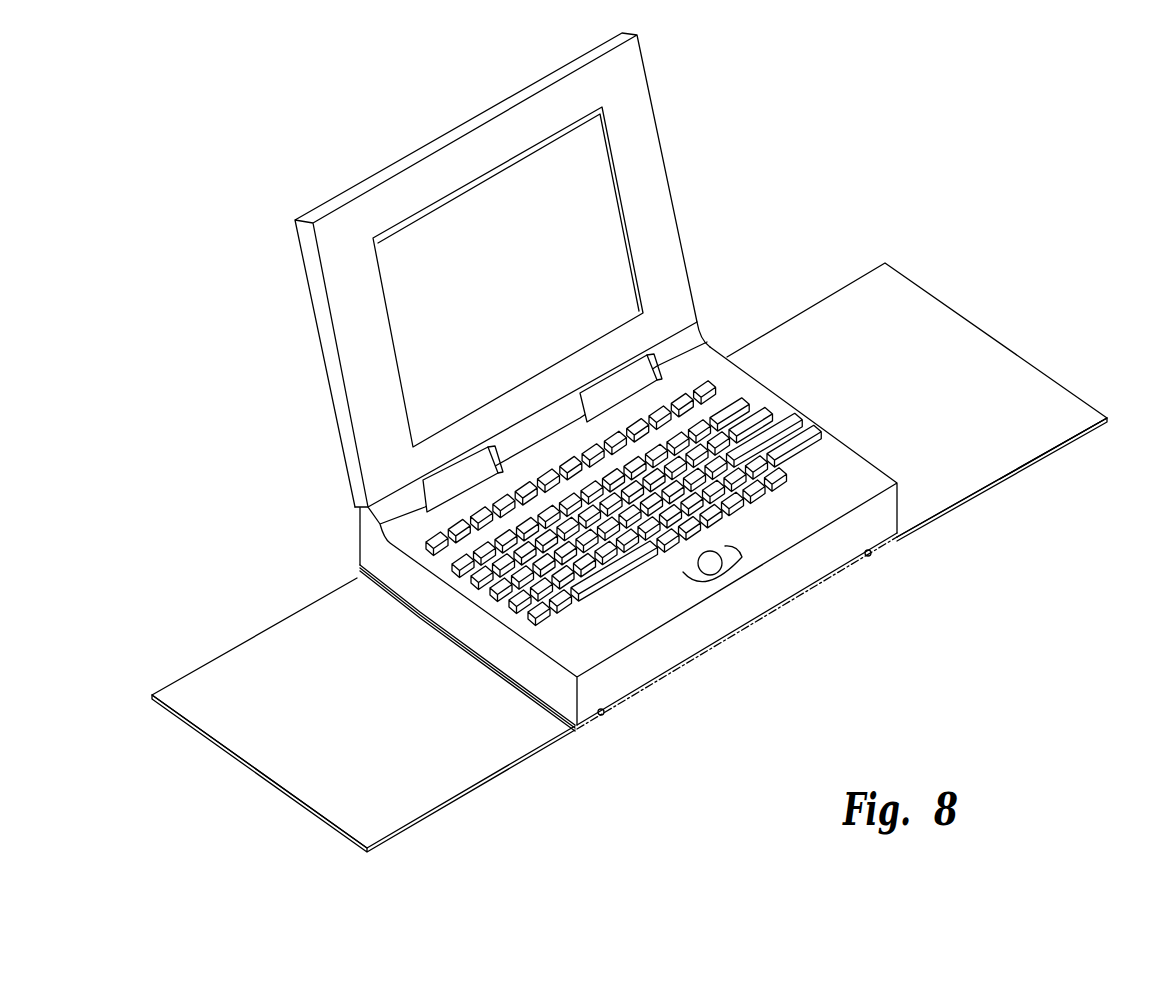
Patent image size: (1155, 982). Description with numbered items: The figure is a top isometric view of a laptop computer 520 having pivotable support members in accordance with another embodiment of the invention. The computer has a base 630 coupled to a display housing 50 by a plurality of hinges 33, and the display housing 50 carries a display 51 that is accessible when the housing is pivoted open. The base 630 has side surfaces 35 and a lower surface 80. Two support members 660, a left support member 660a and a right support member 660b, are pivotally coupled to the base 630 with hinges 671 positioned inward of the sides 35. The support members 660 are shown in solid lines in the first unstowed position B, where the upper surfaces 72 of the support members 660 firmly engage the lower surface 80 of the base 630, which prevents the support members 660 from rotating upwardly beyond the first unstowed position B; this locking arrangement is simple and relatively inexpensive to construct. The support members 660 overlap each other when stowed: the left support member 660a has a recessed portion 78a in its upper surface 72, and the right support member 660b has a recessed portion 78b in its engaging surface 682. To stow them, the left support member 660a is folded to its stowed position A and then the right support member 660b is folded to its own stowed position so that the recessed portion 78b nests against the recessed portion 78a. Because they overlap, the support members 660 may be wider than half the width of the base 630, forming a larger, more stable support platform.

The display housing 50 is at (670, 113).
The display 51 is at (413, 250).
The hinges 33 is at (612, 385).
The side surfaces 35 is at (378, 557).
The base 630 is at (739, 334).
The laptop computer 520 is at (845, 150).
The support members 660 is at (481, 814).
The left support member 660a is at (320, 818).
The right support member 660b is at (948, 308).
The upper surfaces 72 is at (372, 727).
The recessed portion 78a is at (262, 670).
The recessed portion 78b is at (991, 513).
The lower surface 80 is at (488, 665).
The hinges 671 is at (604, 716).
The engaging surface 682 is at (1053, 452).
The stowed position A is at (628, 698).
The first unstowed position B is at (268, 782).